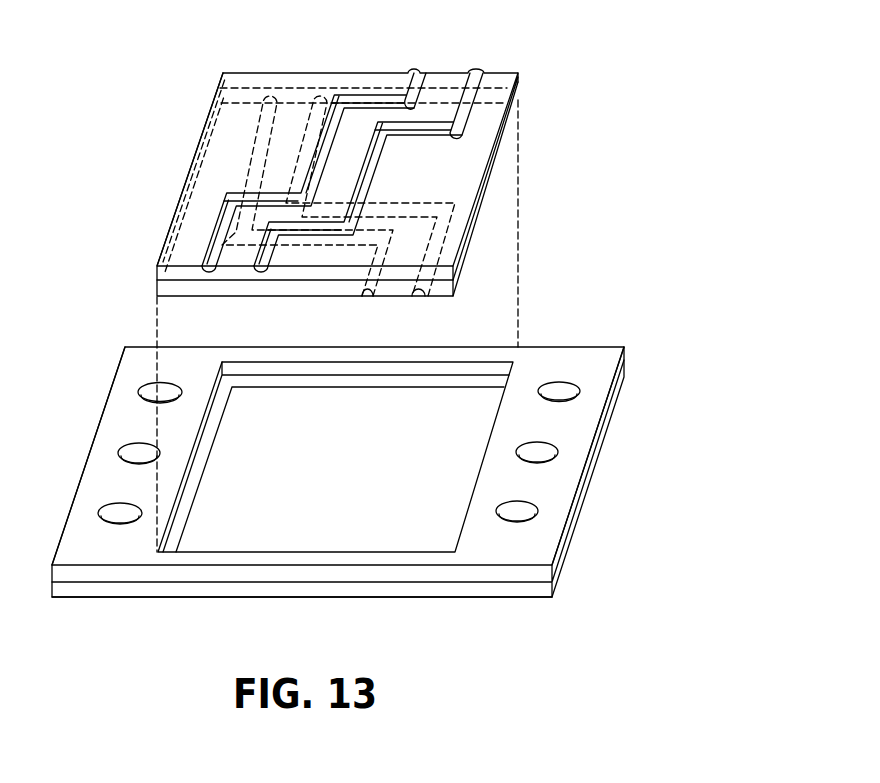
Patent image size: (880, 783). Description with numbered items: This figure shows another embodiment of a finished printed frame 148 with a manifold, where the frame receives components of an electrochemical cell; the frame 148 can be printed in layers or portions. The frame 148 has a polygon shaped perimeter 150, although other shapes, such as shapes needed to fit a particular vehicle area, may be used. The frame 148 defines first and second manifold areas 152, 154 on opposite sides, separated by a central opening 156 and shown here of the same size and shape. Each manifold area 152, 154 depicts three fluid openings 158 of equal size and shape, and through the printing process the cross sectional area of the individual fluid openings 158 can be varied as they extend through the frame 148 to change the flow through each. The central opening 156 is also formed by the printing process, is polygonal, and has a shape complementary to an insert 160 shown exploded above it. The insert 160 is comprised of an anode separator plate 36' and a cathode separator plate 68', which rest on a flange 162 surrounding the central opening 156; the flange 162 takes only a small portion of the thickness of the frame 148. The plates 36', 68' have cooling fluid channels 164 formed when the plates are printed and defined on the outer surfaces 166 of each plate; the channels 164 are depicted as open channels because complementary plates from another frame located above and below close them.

The printed frame 148 is at (577, 437).
The polygon shaped perimeter 150 is at (534, 583).
The first manifold area 152 is at (126, 338).
The second manifold area 154 is at (593, 338).
The central opening 156 is at (335, 504).
The fluid openings 158 is at (138, 392).
The insert 160 is at (227, 133).
The flange 162 is at (275, 388).
The cooling fluid channels 164 is at (416, 74).
The outer surfaces 166 is at (500, 96).
The cathode separator plate 68' is at (171, 169).
The anode separator plate 36' is at (157, 183).